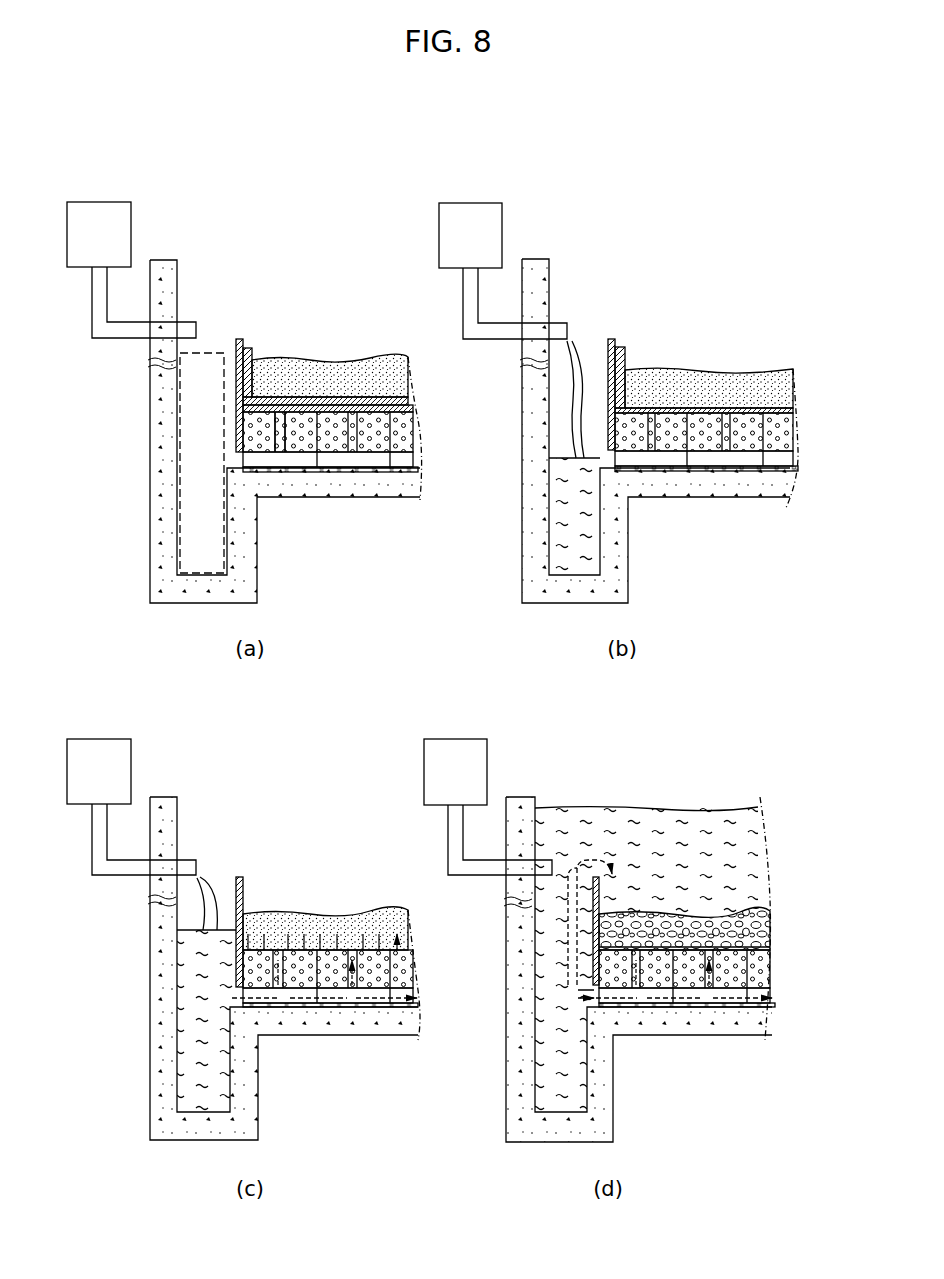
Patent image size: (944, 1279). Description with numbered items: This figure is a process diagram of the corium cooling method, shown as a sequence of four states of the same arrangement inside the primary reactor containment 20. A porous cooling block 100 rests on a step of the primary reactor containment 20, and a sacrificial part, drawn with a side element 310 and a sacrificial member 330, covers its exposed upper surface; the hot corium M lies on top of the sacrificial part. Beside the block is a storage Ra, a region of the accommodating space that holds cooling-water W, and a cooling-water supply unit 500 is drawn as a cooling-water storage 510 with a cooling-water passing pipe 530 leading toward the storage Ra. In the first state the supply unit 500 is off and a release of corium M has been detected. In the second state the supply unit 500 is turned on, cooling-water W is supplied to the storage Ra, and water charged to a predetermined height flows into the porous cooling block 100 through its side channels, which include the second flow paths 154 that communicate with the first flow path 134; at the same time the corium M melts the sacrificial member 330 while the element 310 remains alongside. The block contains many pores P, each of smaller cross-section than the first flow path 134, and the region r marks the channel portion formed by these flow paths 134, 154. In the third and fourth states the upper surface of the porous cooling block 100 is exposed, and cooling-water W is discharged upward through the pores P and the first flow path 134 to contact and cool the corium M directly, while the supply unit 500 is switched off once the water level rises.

The primary reactor containment 20 is at (393, 493).
The porous cooling block 100 is at (533, 660).
The first flow path 134 is at (278, 438).
The second flow paths 154 is at (336, 460).
The side plate 310 is at (255, 358).
The sacrificial member 330 is at (315, 394).
The cooling-water supply unit 500 is at (317, 490).
The cooling-water storage 510 is at (90, 207).
The cooling-water passing pipe 530 is at (140, 327).
The corium M is at (383, 360).
The cooling-water W is at (568, 340).
The pore P is at (405, 446).
The region r is at (260, 545).
The storage Ra is at (192, 513).